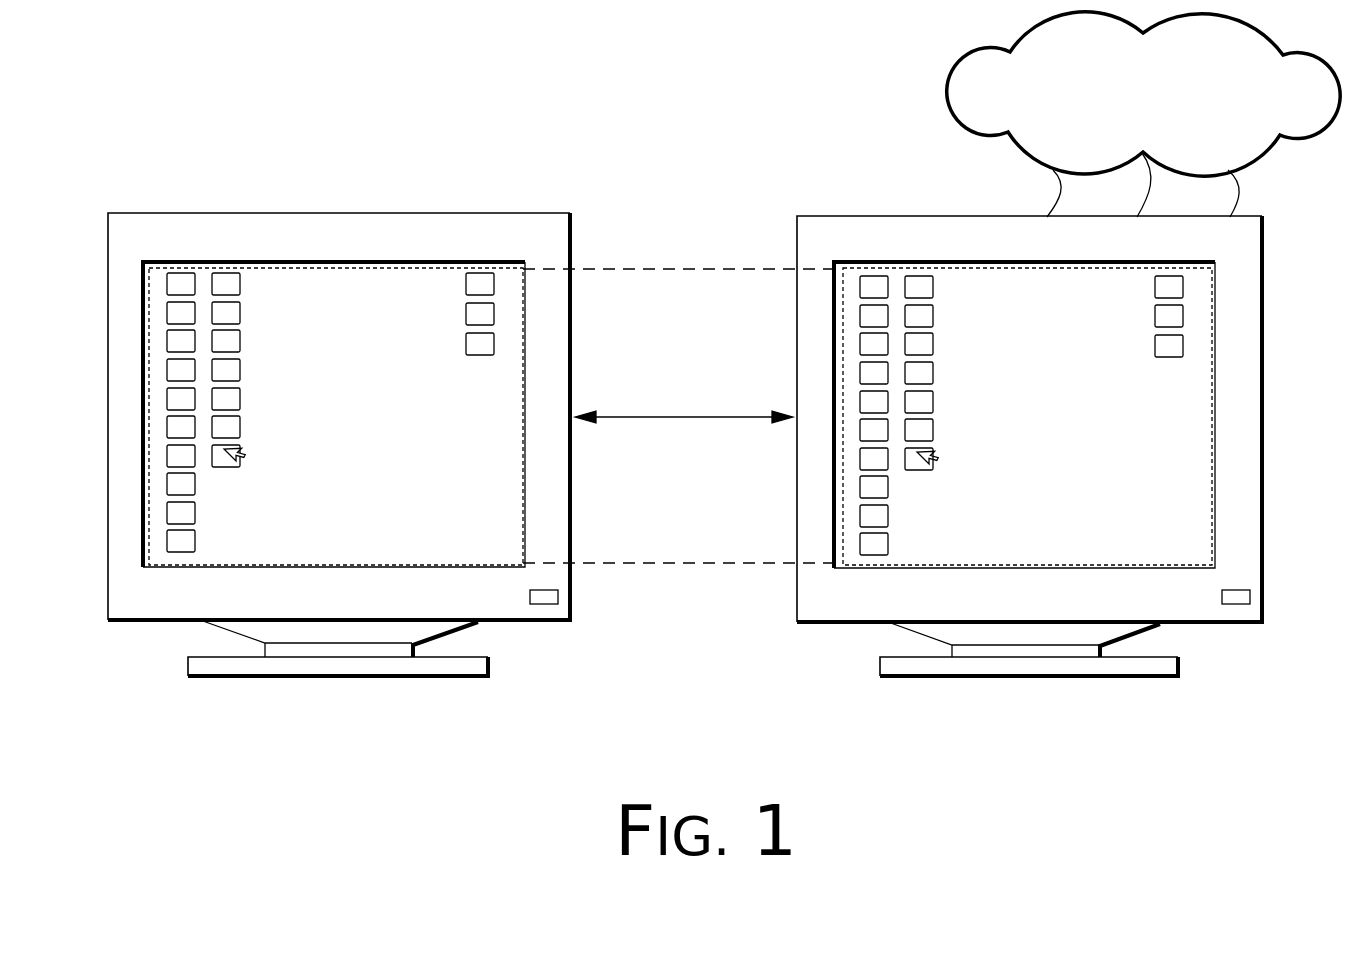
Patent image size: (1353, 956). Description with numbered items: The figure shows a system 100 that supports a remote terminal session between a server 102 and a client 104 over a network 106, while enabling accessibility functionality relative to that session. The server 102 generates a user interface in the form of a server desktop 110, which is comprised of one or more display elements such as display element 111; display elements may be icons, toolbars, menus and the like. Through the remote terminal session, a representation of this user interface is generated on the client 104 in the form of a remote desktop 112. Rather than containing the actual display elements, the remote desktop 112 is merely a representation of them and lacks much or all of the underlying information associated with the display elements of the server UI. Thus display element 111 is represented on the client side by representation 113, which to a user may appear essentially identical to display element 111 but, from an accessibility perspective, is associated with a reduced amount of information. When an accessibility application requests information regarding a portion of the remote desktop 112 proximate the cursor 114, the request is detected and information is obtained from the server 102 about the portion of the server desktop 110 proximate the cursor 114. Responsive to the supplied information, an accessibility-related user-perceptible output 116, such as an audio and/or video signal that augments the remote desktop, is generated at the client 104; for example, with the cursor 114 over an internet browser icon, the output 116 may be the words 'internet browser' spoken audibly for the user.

The system 100 is at (227, 152).
The server 102 is at (265, 249).
The client 104 is at (942, 251).
The network 106 is at (684, 405).
The server desktop 110 is at (445, 572).
The display element 111 is at (466, 346).
The remote desktop 112 is at (988, 262).
The display element representation 113 is at (1154, 348).
The cursor 114 is at (245, 463).
The accessibility-related user-perceptible output 116 is at (1287, 122).